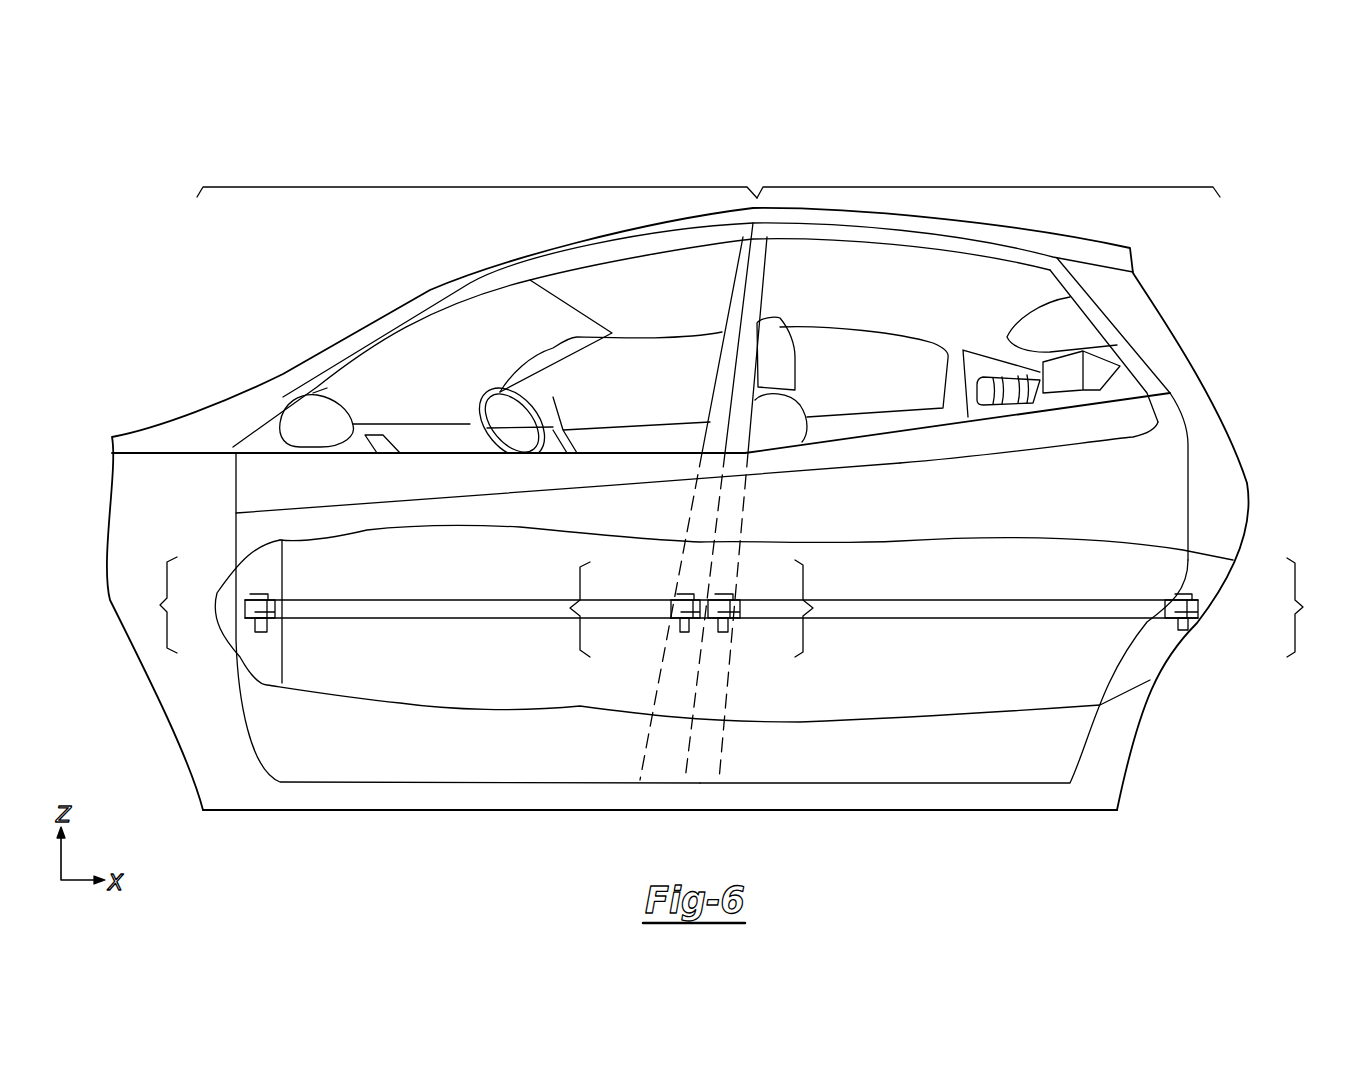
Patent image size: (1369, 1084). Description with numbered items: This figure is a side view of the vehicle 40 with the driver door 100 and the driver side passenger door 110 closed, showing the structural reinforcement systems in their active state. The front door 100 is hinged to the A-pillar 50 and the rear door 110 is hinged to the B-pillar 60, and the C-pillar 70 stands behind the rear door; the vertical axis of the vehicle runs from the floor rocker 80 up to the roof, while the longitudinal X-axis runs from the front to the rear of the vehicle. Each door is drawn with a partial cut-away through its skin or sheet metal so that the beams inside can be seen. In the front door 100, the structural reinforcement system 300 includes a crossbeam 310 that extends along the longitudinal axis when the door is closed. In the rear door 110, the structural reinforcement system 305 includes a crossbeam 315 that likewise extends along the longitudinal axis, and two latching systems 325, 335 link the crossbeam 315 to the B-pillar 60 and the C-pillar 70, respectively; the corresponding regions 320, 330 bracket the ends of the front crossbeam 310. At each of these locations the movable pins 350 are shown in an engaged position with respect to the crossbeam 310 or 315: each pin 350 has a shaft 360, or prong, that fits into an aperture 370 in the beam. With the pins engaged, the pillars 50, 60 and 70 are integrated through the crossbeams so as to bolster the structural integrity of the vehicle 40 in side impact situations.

The vehicle 40 is at (713, 165).
The A-pillar 50 is at (283, 385).
The B-pillar 60 is at (740, 277).
The C-pillar 70 is at (1123, 295).
The floor rocker 80 is at (502, 800).
The front door 100 is at (540, 756).
The rear door 110 is at (918, 756).
The structural reinforcement system 300 is at (472, 186).
The structural reinforcement system 305 is at (985, 186).
The crossbeam 310 is at (453, 598).
The crossbeam 315 is at (997, 598).
The front attachment region 320 is at (151, 605).
The latching system 325 is at (821, 608).
The front-center attachment region 330 is at (567, 609).
The latching system 335 is at (1314, 607).
The movable pin 350 is at (258, 584).
The shaft 360 is at (262, 632).
The aperture 370 is at (277, 610).